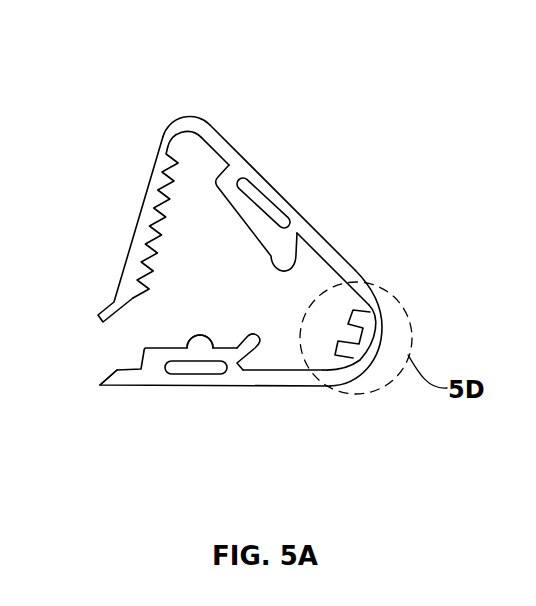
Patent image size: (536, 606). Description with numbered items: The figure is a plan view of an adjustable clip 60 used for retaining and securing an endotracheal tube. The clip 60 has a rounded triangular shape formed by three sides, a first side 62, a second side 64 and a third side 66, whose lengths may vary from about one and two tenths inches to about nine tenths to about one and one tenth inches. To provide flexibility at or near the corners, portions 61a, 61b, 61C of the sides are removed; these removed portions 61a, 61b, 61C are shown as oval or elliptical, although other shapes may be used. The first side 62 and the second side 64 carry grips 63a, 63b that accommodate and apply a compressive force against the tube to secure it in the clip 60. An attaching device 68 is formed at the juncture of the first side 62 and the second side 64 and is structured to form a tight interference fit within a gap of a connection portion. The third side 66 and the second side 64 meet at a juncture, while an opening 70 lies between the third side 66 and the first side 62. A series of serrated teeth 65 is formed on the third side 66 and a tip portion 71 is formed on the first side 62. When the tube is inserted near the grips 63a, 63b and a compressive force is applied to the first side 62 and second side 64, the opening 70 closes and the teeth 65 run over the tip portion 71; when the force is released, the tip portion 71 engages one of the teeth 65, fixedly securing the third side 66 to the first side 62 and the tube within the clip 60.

The adjustable clip 60 is at (357, 57).
The removed portion 61C is at (191, 121).
The removed portion 61a is at (253, 387).
The removed portion 61b is at (350, 267).
The first side 62 is at (293, 377).
The grip 63a is at (210, 346).
The grip 63b is at (260, 202).
The second side 64 is at (247, 168).
The serrated teeth 65 is at (160, 223).
The third side 66 is at (142, 190).
The attaching device 68 is at (380, 342).
The opening 70 is at (135, 338).
The tip portion 71 is at (115, 387).